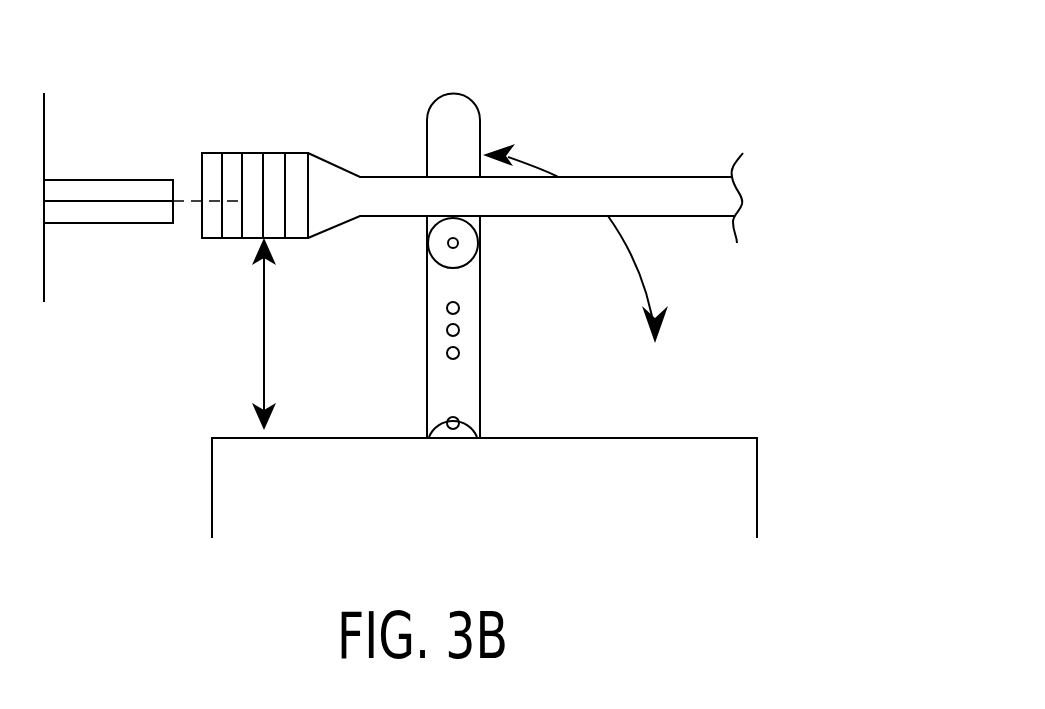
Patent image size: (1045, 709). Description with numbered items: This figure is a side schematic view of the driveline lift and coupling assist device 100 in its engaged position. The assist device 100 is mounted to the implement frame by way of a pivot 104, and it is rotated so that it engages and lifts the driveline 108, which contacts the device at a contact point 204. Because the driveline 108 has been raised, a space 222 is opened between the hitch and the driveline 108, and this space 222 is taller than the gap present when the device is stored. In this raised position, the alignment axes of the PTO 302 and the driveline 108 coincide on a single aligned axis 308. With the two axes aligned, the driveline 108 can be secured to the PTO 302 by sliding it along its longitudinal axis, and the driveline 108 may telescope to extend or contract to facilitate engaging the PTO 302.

The driveline lift and coupling assist device 100 is at (473, 78).
The pivot 104 is at (447, 432).
The driveline 108 is at (677, 188).
The contact point 204 is at (483, 222).
The space 222 is at (240, 324).
The PTO 302 is at (84, 188).
The aligned axis 308 is at (178, 190).